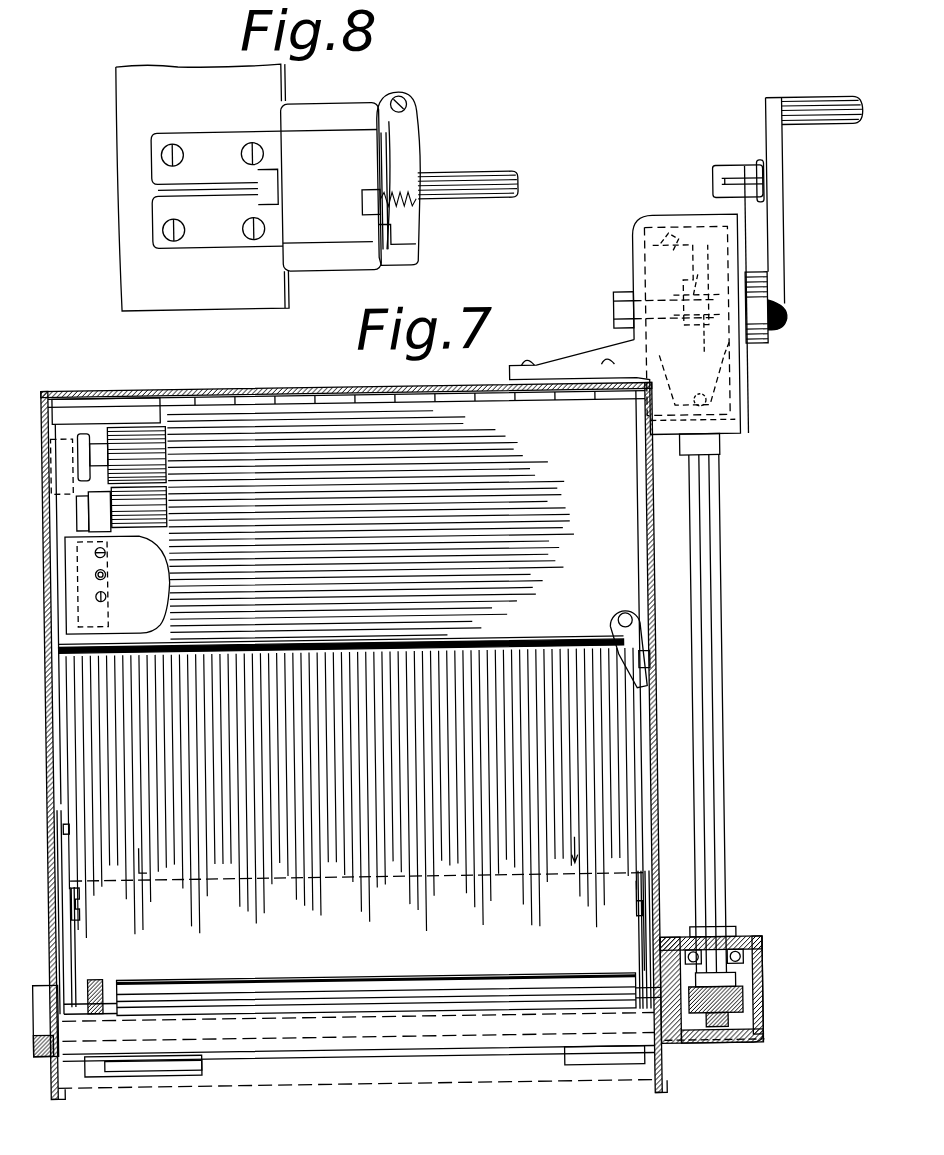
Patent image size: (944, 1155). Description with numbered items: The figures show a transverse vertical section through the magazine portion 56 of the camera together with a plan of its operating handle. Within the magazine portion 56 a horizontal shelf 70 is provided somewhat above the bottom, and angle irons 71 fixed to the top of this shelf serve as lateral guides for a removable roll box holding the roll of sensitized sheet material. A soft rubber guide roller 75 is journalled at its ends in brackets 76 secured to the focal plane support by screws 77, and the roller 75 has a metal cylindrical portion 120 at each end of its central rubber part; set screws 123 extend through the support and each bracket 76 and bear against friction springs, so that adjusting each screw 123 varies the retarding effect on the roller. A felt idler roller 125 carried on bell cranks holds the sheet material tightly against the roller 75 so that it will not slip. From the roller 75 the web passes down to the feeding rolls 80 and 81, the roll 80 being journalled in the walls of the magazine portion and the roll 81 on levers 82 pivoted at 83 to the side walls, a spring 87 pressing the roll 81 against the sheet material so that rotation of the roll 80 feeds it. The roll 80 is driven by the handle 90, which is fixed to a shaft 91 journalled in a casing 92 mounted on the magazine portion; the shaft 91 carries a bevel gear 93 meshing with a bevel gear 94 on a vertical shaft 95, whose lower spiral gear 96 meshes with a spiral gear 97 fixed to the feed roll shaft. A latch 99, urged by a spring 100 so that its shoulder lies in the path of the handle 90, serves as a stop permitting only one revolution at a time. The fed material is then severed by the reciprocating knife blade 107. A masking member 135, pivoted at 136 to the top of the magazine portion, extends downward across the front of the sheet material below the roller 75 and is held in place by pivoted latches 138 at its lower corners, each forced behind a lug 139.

In FIG. 8, the magazine portion 56 is at (203, 187).
In FIG. 7, the magazine portion 56 is at (331, 390).
In FIG. 7, the horizontal partition or shelf 70 is at (463, 880).
In FIG. 7, the angle irons 71 is at (580, 850).
In FIG. 7, the guide roller 75 is at (150, 516).
In FIG. 7, the brackets 76 is at (82, 527).
In FIG. 7, the screws 77 is at (108, 593).
In FIG. 7, the roll 80 is at (318, 980).
In FIG. 7, the roll 81 is at (216, 996).
In FIG. 7, the levers 82 is at (64, 967).
In FIG. 7, the pivot 83 is at (640, 905).
In FIG. 7, the spring 87 is at (648, 928).
In FIG. 8, the handle 90 is at (478, 173).
In FIG. 7, the handle 90 is at (784, 193).
In FIG. 7, the shaft 91 is at (706, 304).
In FIG. 8, the casing 92 is at (266, 187).
In FIG. 7, the casing 92 is at (682, 218).
In FIG. 7, the bevel gear 93 is at (658, 256).
In FIG. 7, the bevel gear 94 is at (735, 367).
In FIG. 7, the vertical shaft 95 is at (726, 550).
In FIG. 7, the spiral gear 96 is at (742, 998).
In FIG. 7, the spiral gear 97 is at (745, 1016).
In FIG. 8, the latch 99 is at (417, 128).
In FIG. 7, the latch 99 is at (759, 168).
In FIG. 8, the spring 100 is at (420, 218).
In FIG. 7, the reciprocating knife blade 107 is at (323, 1053).
In FIG. 7, the cylindrical portion 120 is at (102, 531).
In FIG. 7, the set screws 123 is at (108, 571).
In FIG. 7, the idler roller 125 is at (150, 416).
In FIG. 7, the masking member 135 is at (541, 497).
In FIG. 7, the pivot 136 is at (503, 396).
In FIG. 7, the pivoted latches 138 is at (549, 627).
In FIG. 7, the lug 139 is at (650, 662).